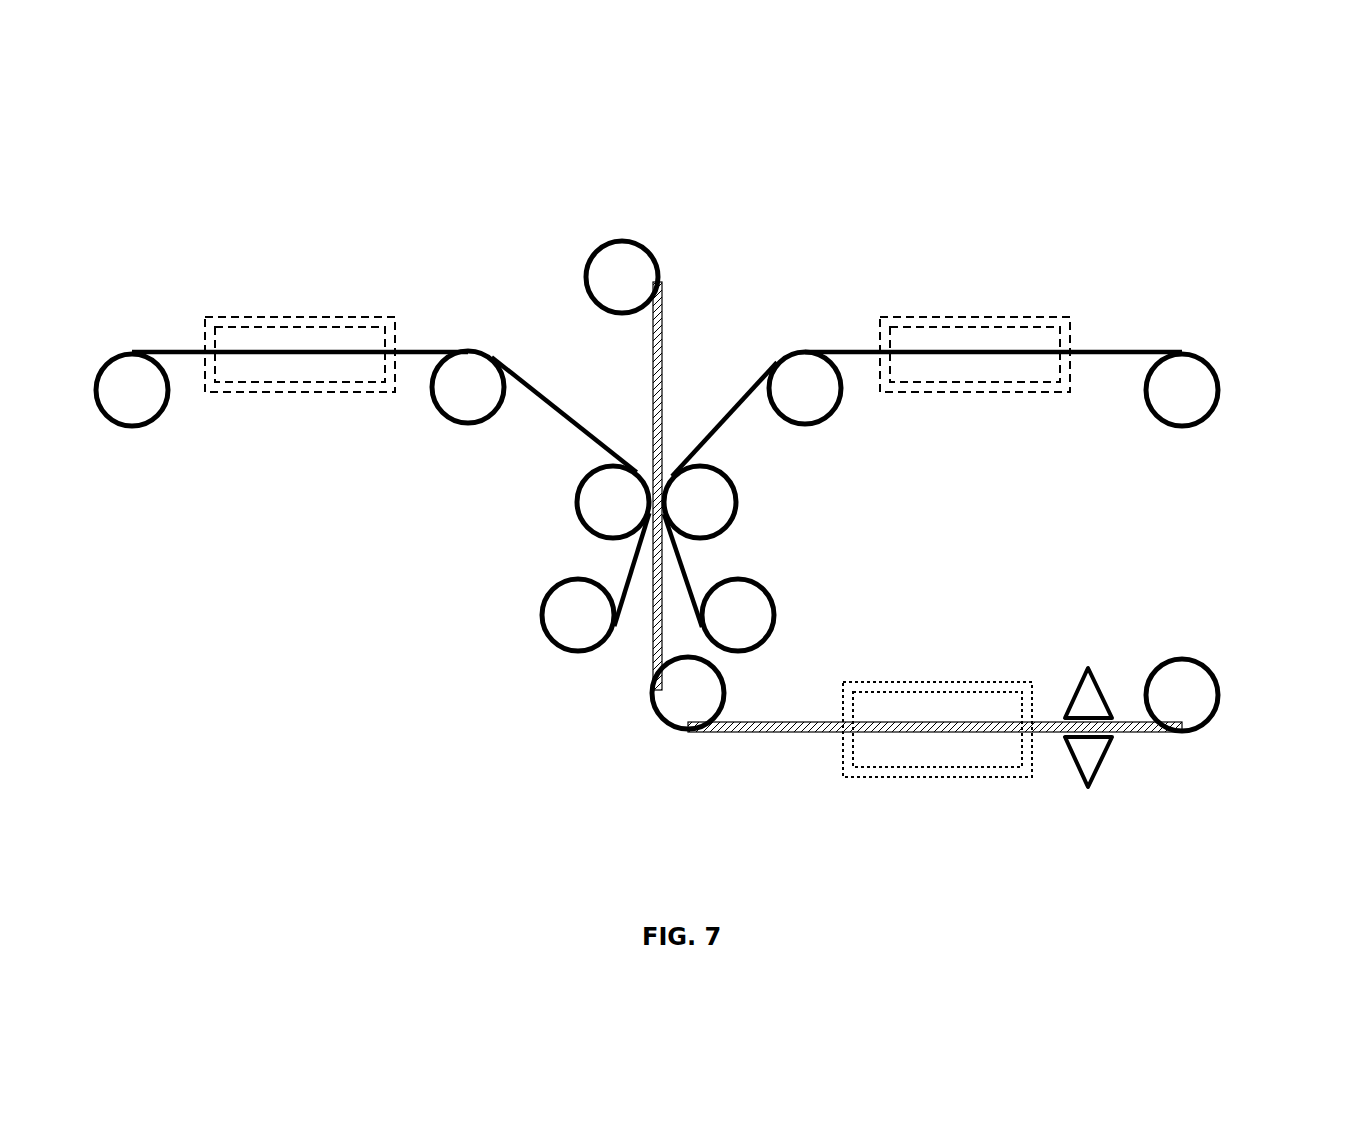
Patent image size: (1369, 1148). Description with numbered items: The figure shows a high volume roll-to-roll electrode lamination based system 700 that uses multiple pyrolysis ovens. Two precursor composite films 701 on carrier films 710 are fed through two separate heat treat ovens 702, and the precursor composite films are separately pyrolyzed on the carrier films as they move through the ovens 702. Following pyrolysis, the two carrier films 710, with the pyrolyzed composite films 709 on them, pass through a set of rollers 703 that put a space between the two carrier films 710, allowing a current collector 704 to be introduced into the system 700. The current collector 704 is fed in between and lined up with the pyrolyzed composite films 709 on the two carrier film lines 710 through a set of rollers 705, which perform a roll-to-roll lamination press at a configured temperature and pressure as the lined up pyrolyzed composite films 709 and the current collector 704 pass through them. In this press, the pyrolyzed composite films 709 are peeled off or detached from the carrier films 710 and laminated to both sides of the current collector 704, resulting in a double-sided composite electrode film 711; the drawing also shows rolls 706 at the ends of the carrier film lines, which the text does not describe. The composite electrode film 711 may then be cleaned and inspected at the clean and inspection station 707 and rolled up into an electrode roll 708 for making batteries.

The system 700 is at (215, 118).
The precursor composite film 701 is at (168, 345).
The heat treat oven 702 is at (265, 315).
The roller 703 is at (438, 418).
The current collector 704 is at (663, 387).
The roller 705 is at (572, 493).
The liner take-up roll 706 is at (537, 628).
The clean and inspection station 707 is at (940, 682).
The electrode roll 708 is at (1220, 718).
The pyrolyzed composite film 709 is at (422, 345).
The carrier film 710 is at (625, 558).
The double-sided composite electrode film 711 is at (780, 737).